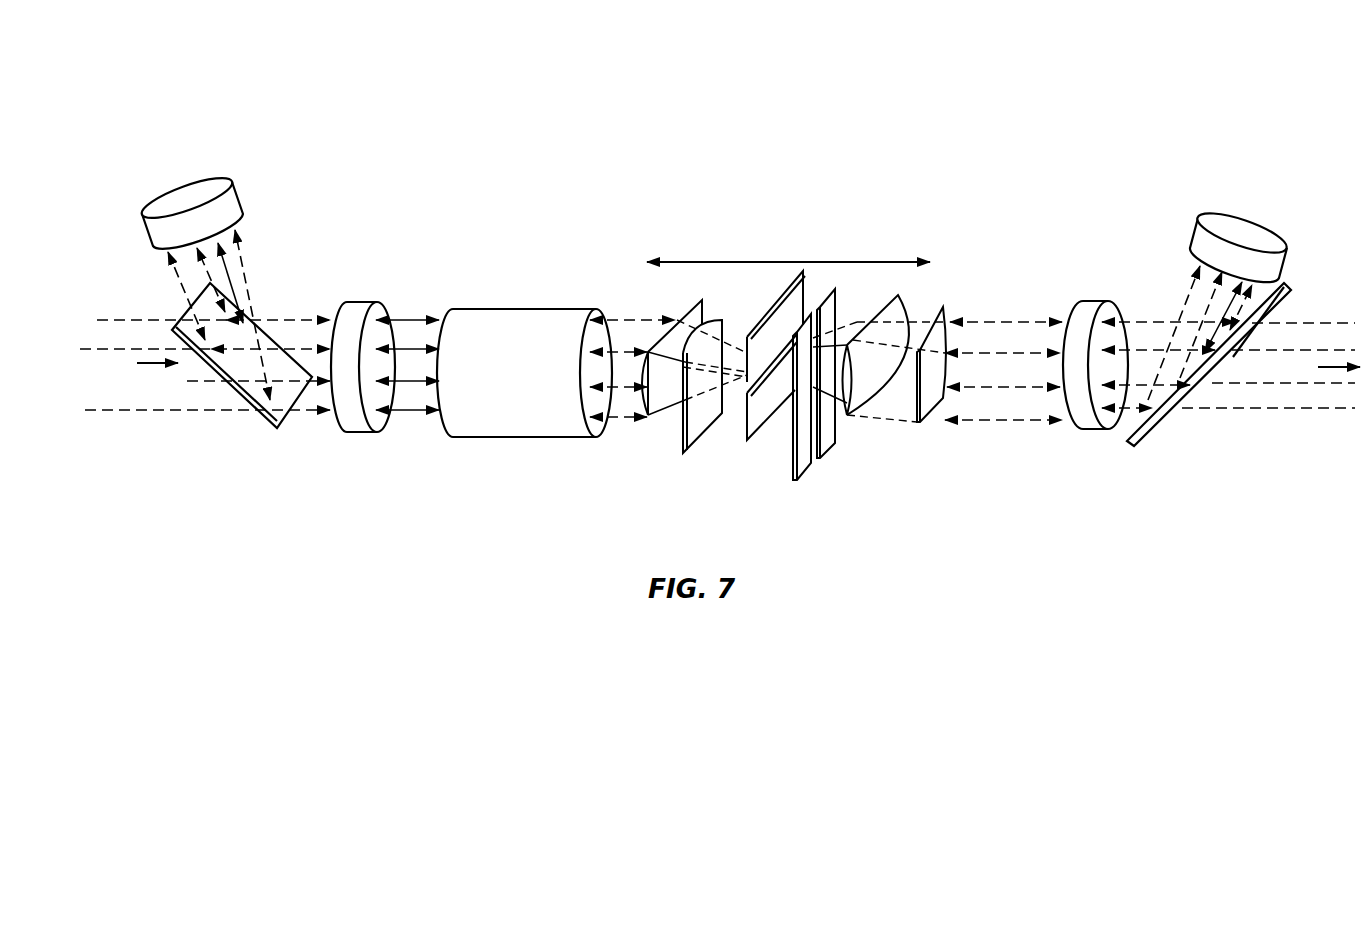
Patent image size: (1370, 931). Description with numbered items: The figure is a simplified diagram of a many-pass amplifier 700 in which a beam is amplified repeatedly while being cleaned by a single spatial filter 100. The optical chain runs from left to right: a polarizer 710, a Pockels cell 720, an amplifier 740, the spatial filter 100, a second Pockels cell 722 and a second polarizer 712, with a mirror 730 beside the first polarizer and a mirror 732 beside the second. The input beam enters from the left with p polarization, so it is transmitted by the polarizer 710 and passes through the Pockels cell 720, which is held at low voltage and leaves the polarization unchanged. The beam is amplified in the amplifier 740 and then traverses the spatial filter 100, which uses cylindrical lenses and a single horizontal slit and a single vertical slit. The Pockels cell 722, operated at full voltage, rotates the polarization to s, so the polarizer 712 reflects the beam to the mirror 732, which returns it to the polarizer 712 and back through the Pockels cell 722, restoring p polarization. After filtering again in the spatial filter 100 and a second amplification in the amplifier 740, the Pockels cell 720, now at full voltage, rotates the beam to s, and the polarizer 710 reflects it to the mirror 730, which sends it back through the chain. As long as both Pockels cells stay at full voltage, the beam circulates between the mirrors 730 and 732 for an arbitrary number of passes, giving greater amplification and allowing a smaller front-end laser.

The many-pass amplifier 700 is at (903, 90).
The mirror 730 is at (236, 203).
The polarizer 710 is at (274, 426).
The Pockels cell 720 is at (360, 434).
The amplifier 740 is at (547, 308).
The spatial filter 100 is at (945, 463).
The Pockels cell 722 is at (1088, 431).
The polarizer 712 is at (1129, 444).
The mirror 732 is at (1200, 230).